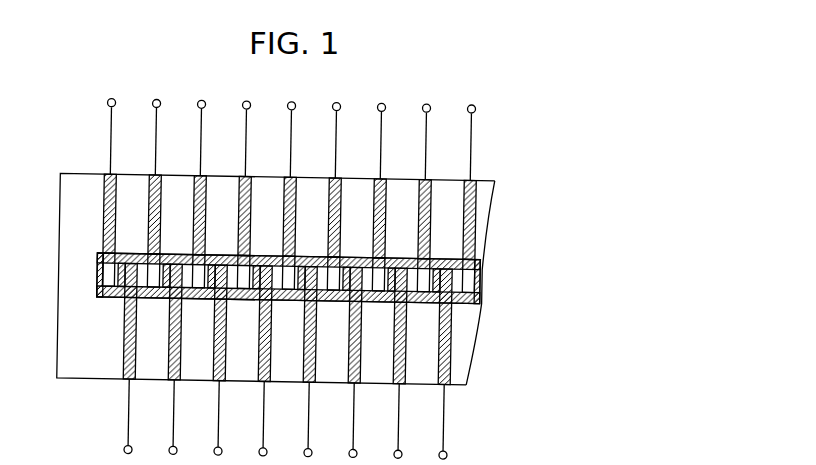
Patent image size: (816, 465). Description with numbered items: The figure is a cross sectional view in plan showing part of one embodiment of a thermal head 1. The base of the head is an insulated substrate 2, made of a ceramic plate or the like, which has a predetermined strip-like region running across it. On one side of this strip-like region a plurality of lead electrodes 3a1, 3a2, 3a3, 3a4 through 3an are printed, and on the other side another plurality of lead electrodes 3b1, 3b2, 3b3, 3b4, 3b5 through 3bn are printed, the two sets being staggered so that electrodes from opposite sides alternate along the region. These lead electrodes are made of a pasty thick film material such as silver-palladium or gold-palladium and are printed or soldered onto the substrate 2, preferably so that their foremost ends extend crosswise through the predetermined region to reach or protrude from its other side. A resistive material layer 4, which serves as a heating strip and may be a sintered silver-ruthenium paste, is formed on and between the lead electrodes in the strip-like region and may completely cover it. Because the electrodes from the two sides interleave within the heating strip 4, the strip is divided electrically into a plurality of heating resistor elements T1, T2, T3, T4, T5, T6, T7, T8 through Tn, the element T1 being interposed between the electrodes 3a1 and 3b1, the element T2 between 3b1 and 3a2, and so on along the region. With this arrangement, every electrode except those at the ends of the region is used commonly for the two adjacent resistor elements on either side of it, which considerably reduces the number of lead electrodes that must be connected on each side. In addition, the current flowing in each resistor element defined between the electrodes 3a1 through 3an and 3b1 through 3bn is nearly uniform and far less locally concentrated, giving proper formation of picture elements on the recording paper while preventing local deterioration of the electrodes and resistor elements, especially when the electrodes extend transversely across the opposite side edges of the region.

The thermal head 1 is at (285, 278).
The insulated substrate 2 is at (68, 242).
The lead electrode 3a1 is at (103, 191).
The lead electrode 3a2 is at (153, 183).
The lead electrode 3a3 is at (197, 183).
The lead electrode 3a4 is at (240, 181).
The lead electrode 3an is at (473, 194).
The lead electrode 3b1 is at (122, 372).
The lead electrode 3b2 is at (168, 371).
The lead electrode 3b3 is at (213, 370).
The lead electrode 3b4 is at (258, 369).
The lead electrode 3b5 is at (303, 368).
The lead electrode 3bn is at (447, 368).
The resistive material layer 4 is at (468, 276).
The heating resistor element T1 is at (118, 257).
The heating resistor element T2 is at (140, 300).
The heating resistor element T3 is at (162, 257).
The heating resistor element T4 is at (186, 300).
The heating resistor element T5 is at (207, 257).
The heating resistor element T6 is at (230, 300).
The heating resistor element T7 is at (252, 257).
The heating resistor element T8 is at (280, 300).
The heating resistor element Tn is at (458, 300).